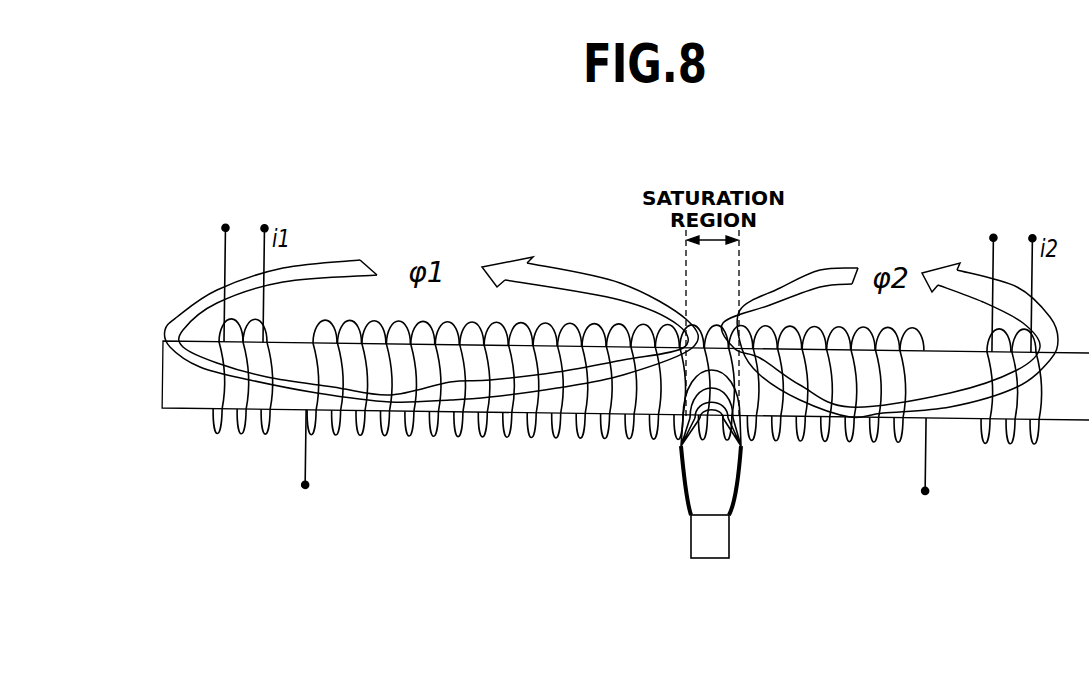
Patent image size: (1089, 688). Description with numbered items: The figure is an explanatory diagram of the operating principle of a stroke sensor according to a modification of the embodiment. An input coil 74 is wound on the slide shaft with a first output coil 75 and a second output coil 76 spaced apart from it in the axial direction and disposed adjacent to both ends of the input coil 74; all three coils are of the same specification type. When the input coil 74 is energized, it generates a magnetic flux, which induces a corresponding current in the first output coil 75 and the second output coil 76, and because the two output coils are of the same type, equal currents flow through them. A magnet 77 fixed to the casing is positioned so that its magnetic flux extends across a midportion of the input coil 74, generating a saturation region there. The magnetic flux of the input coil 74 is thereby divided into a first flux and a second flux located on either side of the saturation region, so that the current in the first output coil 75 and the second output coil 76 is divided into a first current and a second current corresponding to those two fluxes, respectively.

The input coil 74 is at (482, 433).
The first output coil 75 is at (240, 435).
The second output coil 76 is at (1010, 445).
The magnet 77 is at (708, 558).